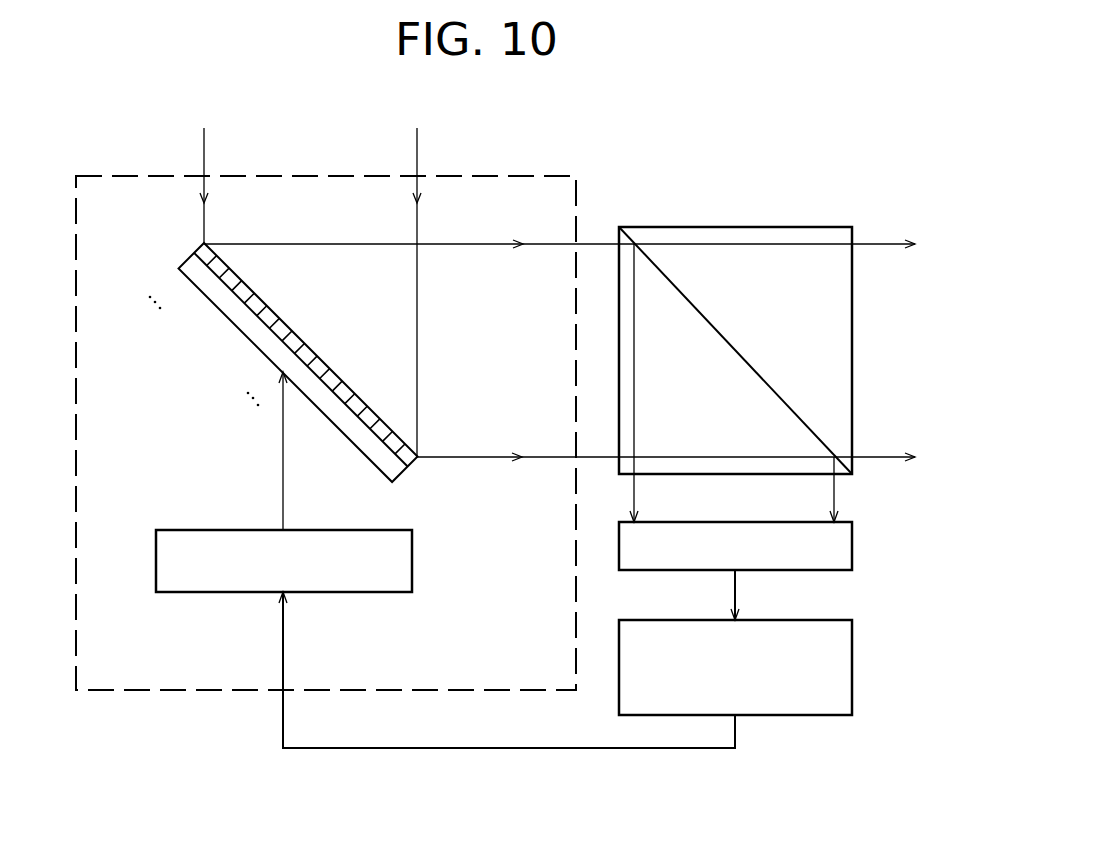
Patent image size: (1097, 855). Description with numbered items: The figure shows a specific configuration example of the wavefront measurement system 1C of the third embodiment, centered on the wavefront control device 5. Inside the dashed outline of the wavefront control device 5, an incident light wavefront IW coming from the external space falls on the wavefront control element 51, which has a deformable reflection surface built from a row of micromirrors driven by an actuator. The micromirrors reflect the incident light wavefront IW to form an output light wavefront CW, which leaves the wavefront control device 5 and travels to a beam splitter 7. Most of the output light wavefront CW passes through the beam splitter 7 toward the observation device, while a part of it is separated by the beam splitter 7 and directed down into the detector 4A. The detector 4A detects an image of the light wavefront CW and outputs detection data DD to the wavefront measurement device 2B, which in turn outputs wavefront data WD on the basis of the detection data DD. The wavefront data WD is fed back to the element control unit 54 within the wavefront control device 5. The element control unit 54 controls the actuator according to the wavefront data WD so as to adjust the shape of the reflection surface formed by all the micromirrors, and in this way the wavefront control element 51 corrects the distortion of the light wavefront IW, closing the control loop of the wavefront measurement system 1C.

The wavefront measurement system 1C is at (839, 111).
The wavefront control device 5 is at (131, 692).
The wavefront control element 51 is at (178, 268).
The element control unit 54 is at (191, 529).
The beam splitter 7 is at (718, 226).
The detector 4A is at (853, 549).
The wavefront measurement device 2B is at (853, 647).
The incident light wavefront IW is at (417, 147).
The output light wavefront CW is at (550, 458).
The detection data DD is at (755, 595).
The wavefront data WD is at (533, 672).